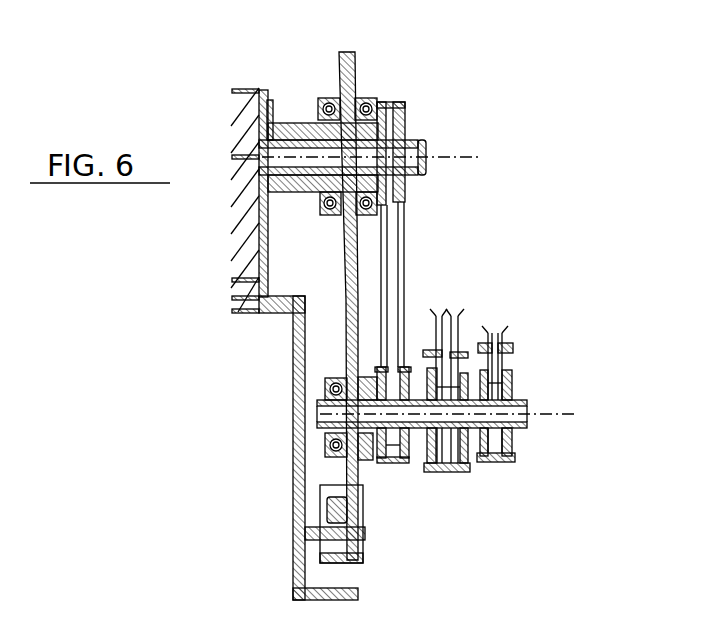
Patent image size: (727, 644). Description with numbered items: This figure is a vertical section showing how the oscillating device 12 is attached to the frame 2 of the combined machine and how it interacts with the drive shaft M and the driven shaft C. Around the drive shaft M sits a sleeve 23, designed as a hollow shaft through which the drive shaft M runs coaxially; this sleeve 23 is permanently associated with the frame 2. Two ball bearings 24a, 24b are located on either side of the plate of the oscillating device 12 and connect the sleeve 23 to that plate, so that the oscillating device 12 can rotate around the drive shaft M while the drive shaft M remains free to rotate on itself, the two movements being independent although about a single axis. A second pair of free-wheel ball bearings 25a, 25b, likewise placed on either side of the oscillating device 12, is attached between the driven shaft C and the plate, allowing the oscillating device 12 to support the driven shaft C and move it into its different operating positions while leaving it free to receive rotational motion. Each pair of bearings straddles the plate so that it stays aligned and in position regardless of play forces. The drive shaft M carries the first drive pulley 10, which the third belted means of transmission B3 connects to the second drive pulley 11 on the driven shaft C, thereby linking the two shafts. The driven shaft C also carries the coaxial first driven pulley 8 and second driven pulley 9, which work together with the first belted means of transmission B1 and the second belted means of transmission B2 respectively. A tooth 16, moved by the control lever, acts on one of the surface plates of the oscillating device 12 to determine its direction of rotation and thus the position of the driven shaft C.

The frame 2 is at (263, 307).
The first driven pulley 8 is at (512, 375).
The second driven pulley 9 is at (465, 477).
The first drive pulley 10 is at (406, 115).
The second drive pulley 11 is at (407, 463).
The oscillating device 12 is at (357, 62).
The tooth 16 is at (305, 535).
The sleeve 23 is at (290, 120).
The ball bearing 24a is at (329, 96).
The ball bearing 24b is at (368, 98).
The free-wheel ball bearing 25a is at (324, 381).
The free-wheel ball bearing 25b is at (347, 350).
The first belted means of transmission B1 is at (497, 343).
The second belted means of transmission B2 is at (450, 313).
The third belted means of transmission B3 is at (403, 228).
The driven shaft C is at (532, 407).
The drive shaft M is at (428, 145).